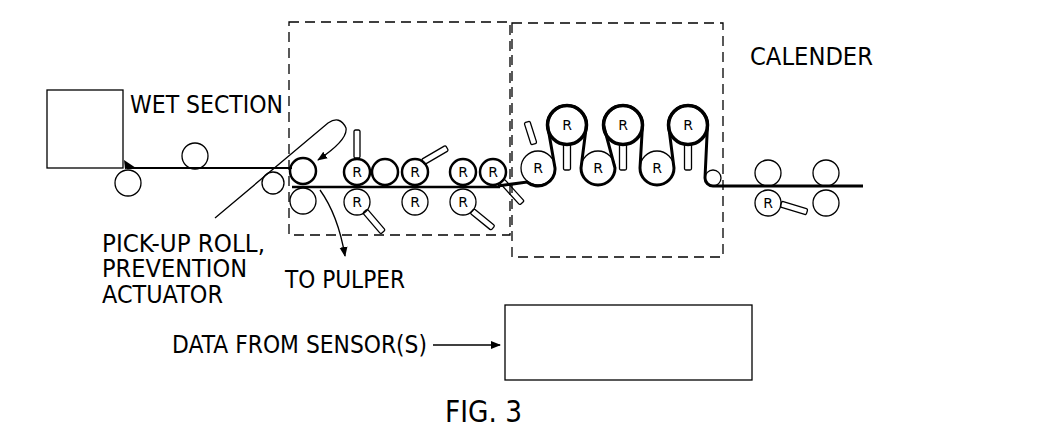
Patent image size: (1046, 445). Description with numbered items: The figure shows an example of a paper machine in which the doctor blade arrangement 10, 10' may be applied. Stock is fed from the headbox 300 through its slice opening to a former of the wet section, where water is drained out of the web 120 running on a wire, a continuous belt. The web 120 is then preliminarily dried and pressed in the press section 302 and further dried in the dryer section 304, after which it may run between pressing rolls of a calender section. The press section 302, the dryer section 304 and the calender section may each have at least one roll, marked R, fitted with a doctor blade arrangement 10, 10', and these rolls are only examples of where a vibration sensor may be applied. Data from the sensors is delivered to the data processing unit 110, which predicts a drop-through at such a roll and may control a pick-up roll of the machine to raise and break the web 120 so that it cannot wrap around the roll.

The headbox 300 is at (69, 87).
The press section 302 is at (288, 42).
The dryer section 304 is at (725, 120).
The web 120 is at (217, 165).
The doctor blade arrangement 10 is at (582, 181).
The doctor blade arrangement 10' is at (582, 181).
The data processing unit 110 is at (720, 305).